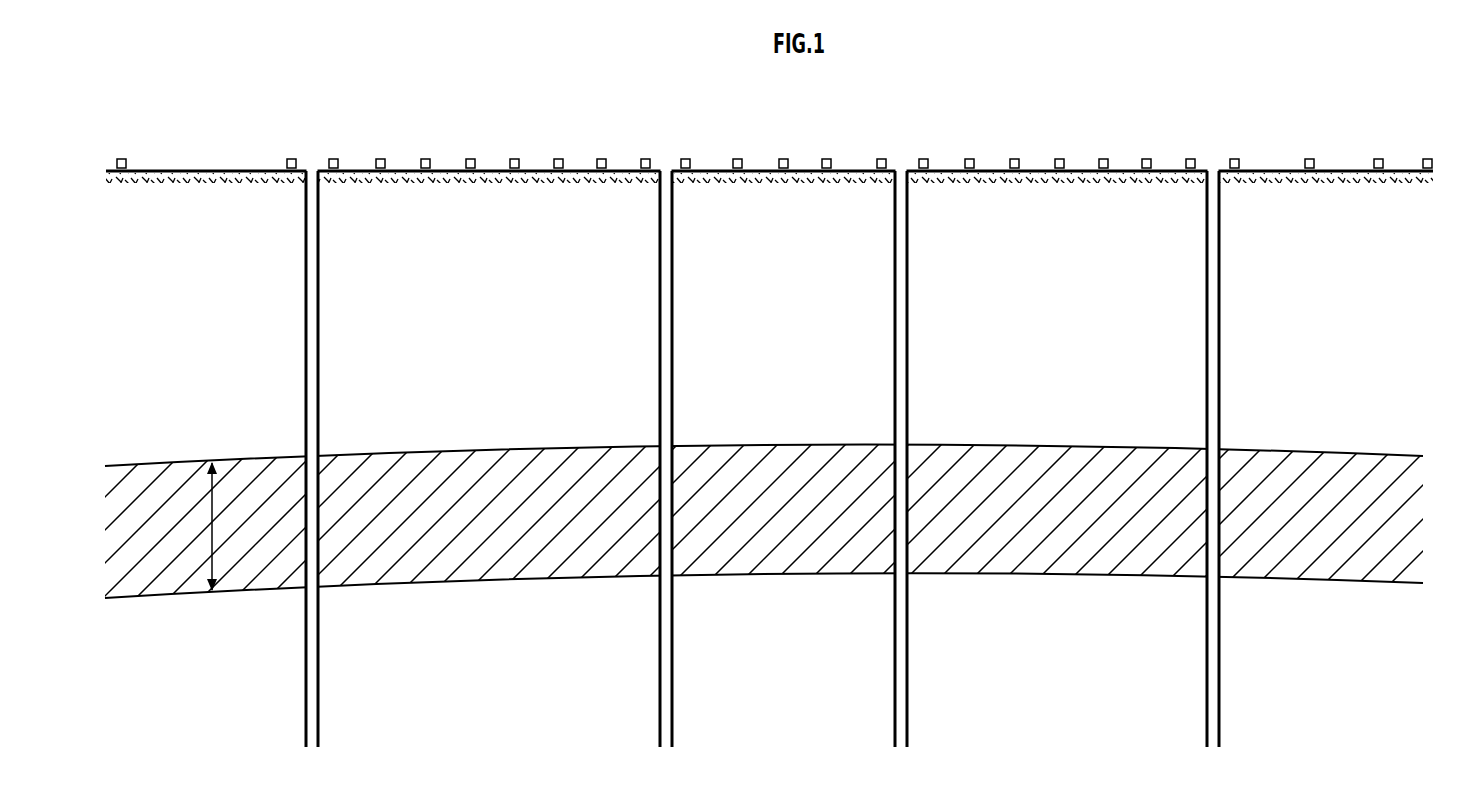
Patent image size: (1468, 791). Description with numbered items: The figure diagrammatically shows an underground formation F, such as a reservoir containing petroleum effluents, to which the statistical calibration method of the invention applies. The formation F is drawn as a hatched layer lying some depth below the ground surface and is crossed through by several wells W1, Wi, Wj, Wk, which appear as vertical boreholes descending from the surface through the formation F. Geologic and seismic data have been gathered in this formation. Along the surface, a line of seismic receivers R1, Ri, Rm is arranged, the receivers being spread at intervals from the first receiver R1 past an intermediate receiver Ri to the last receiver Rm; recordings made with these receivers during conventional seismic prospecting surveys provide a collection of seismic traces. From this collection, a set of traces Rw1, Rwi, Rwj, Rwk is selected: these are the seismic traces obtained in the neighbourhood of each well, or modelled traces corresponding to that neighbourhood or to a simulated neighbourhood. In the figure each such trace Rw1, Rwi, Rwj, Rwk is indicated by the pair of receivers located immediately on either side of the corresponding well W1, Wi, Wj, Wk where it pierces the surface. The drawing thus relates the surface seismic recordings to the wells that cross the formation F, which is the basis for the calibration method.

The seismic receiver R1 is at (122, 153).
The well-neighbourhood seismic trace Rw1 is at (292, 153).
The well-neighbourhood seismic trace Rwi is at (646, 153).
The seismic receiver Ri is at (783, 153).
The well-neighbourhood seismic trace Rwj is at (883, 153).
The well-neighbourhood seismic trace Rwk is at (1194, 153).
The seismic receiver Rm is at (1428, 153).
The well W1 is at (353, 521).
The well Wi is at (677, 527).
The well Wj is at (912, 520).
The well Wk is at (1257, 517).
The underground formation F is at (479, 543).